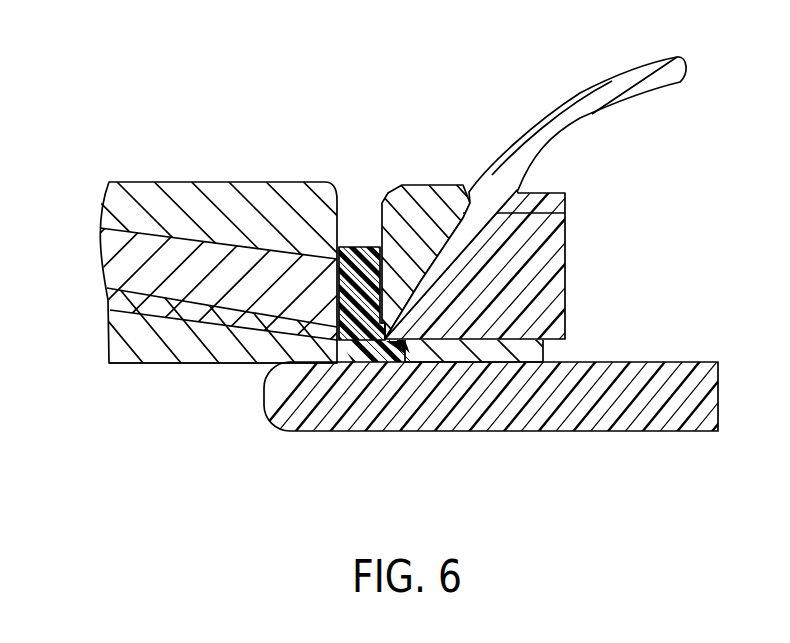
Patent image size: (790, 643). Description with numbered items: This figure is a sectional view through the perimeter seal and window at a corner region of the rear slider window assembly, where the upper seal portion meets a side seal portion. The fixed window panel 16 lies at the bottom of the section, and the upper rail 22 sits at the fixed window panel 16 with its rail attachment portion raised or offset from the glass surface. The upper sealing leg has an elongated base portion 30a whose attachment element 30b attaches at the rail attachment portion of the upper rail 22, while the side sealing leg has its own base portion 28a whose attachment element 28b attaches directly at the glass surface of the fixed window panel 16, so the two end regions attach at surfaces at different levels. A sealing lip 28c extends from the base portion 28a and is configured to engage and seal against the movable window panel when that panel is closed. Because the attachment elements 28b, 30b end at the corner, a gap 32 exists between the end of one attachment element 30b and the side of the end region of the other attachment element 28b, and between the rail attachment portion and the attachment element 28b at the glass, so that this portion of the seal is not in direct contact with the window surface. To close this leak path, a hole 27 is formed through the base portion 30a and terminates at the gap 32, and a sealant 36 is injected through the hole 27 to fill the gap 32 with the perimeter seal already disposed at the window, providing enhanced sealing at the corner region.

The fixed window panel 16 is at (558, 413).
The upper rail 22 is at (109, 348).
The hole 27 is at (331, 161).
The base portion 28a is at (552, 281).
The attachment element 28b is at (475, 363).
The sealing lip 28c is at (633, 79).
The base portion 30a is at (197, 200).
The attachment element 30b is at (109, 296).
The gap 32 is at (387, 363).
The sealant 36 is at (349, 247).